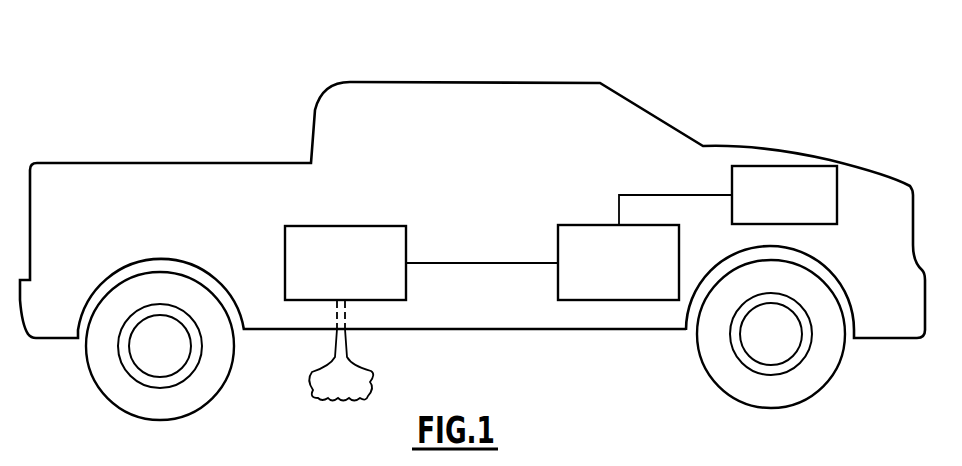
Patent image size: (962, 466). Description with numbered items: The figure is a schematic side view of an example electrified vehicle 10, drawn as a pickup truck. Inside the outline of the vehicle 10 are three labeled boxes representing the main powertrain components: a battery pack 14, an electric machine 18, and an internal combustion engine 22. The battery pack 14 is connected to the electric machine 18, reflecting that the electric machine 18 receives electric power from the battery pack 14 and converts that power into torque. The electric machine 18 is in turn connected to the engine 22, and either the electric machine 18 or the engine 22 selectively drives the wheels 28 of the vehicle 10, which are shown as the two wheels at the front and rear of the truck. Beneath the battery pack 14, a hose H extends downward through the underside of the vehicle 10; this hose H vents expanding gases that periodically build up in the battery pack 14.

The electrified vehicle 10 is at (785, 107).
The battery pack 14 is at (363, 226).
The electric machine 18 is at (584, 225).
The internal combustion engine 22 is at (798, 166).
The wheels 28 is at (100, 385).
The hose H is at (322, 317).